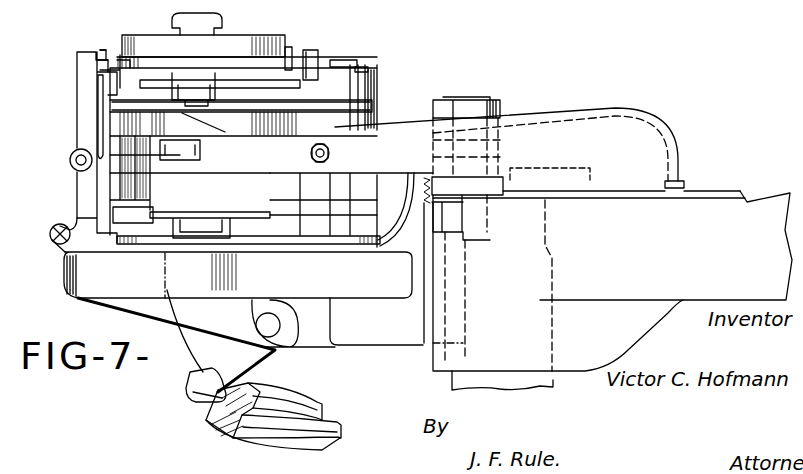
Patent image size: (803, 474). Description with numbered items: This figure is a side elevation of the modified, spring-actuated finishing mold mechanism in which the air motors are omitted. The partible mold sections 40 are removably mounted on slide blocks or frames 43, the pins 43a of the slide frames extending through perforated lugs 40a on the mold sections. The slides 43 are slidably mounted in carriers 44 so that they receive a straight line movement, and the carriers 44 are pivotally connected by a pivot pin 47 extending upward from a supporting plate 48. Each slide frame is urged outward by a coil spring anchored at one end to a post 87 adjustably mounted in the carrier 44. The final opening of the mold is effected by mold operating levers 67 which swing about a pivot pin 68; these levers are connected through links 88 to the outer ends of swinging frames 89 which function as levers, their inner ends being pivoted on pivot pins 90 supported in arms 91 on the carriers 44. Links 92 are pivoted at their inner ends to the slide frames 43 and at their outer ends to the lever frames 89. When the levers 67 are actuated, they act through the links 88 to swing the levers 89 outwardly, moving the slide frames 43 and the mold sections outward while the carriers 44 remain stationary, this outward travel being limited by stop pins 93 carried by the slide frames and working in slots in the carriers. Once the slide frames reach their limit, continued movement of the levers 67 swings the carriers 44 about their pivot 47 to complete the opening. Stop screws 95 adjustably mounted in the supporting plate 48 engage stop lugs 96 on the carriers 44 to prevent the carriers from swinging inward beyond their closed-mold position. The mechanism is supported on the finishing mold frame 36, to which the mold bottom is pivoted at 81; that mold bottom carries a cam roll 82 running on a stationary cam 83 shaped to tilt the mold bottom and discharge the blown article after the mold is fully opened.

The finishing mold frame 36 is at (437, 353).
The partible mold sections 40 is at (241, 38).
The perforated lugs 40a is at (97, 72).
The slide blocks 43 is at (110, 88).
The pins 43a is at (128, 62).
The carriers 44 is at (76, 108).
The pivot pin 47 is at (337, 62).
The supporting plate 48 is at (362, 290).
The mold operating levers 67 is at (528, 123).
The pivot pin 68 is at (470, 100).
The pivot 81 is at (256, 320).
The cam roll 82 is at (188, 389).
The stationary cam 83 is at (210, 418).
The post 87 is at (69, 165).
The links 88 is at (175, 168).
The swinging frames 89 is at (237, 108).
The pivot pins 90 is at (360, 68).
The arms 91 is at (310, 78).
The links 92 is at (182, 72).
The stop pins 93 is at (98, 50).
The stop screws 95 is at (53, 230).
The stop lugs 96 is at (72, 222).